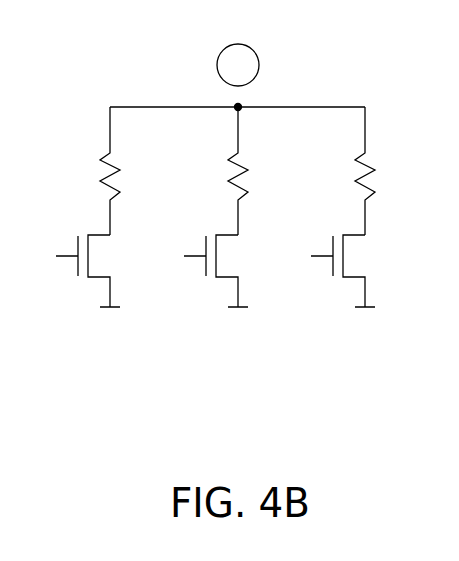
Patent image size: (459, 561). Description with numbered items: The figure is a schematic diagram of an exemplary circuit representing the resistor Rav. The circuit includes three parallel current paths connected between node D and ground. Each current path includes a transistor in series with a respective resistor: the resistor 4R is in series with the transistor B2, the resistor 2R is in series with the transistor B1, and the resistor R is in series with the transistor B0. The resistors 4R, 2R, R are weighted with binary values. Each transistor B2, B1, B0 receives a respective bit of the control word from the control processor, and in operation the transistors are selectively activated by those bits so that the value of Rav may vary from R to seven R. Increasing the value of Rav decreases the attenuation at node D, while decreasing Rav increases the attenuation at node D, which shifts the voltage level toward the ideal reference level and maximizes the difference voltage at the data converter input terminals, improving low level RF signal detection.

The resistor Rav is at (213, 162).
The node D is at (238, 77).
The resistor 4R is at (91, 171).
The resistor 2R is at (218, 171).
The resistor R is at (350, 171).
The transistor B2 is at (71, 271).
The transistor B1 is at (201, 271).
The transistor B0 is at (326, 271).